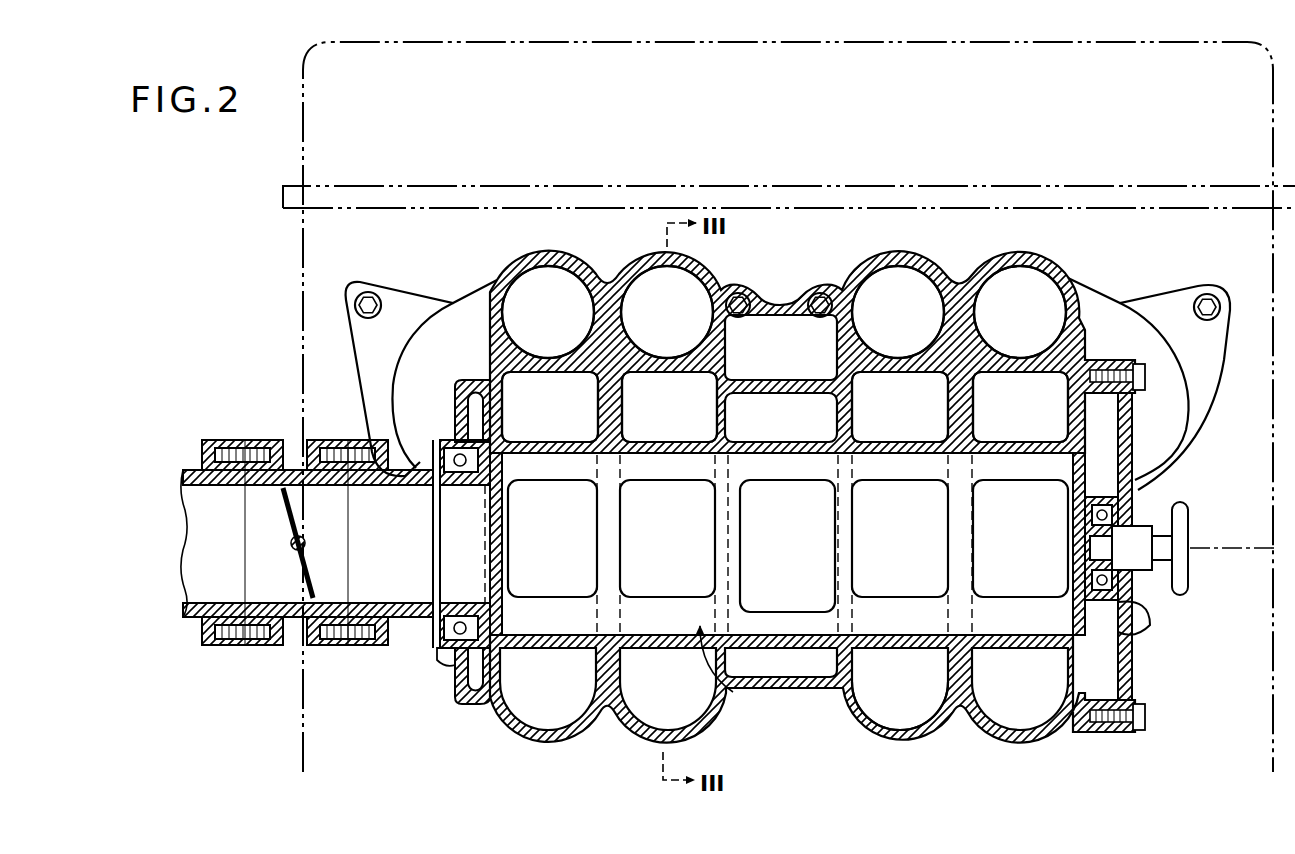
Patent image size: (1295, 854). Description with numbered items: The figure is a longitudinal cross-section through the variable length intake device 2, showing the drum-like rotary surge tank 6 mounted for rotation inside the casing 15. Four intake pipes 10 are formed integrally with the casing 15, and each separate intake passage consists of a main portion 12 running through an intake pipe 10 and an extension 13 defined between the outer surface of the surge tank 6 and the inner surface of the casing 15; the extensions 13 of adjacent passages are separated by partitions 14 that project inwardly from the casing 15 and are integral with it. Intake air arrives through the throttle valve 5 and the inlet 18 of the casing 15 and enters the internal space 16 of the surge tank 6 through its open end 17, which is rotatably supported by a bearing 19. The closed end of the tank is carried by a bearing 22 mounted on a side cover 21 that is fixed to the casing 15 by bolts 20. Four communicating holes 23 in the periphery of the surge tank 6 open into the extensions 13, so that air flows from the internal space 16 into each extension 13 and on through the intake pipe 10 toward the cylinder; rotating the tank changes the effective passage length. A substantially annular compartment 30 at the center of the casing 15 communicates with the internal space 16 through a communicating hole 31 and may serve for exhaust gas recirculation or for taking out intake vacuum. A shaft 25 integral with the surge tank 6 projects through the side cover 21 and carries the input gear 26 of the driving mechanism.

The variable length intake device 2 is at (430, 693).
The throttle valve 5 is at (306, 573).
The rotary surge tank 6 is at (923, 648).
The intake pipes 10 is at (476, 318).
The main portion 12 is at (561, 327).
The extension 13 is at (572, 432).
The partitions 14 is at (505, 406).
The casing 15 is at (510, 739).
The internal space 16 is at (735, 693).
The open end 17 is at (470, 566).
The inlet 18 is at (398, 566).
The bearing 19 is at (448, 652).
The bolts 20 is at (1147, 376).
The side cover 21 is at (1133, 668).
The bearing 22 is at (1137, 597).
The communicating holes 23 is at (567, 563).
The shaft 25 is at (1185, 548).
The input gear 26 is at (1186, 590).
The annular compartment 30 is at (816, 665).
The communicating hole 31 is at (792, 563).